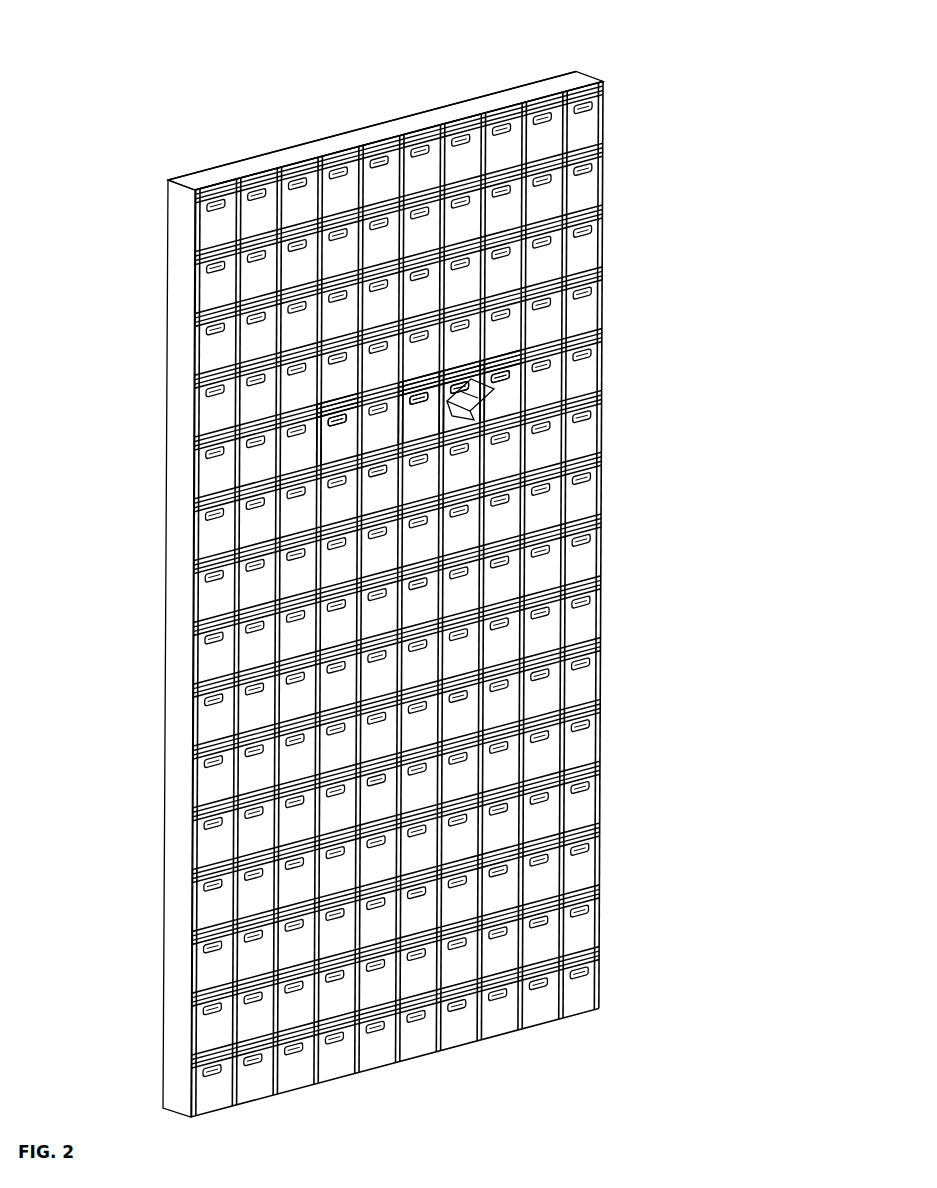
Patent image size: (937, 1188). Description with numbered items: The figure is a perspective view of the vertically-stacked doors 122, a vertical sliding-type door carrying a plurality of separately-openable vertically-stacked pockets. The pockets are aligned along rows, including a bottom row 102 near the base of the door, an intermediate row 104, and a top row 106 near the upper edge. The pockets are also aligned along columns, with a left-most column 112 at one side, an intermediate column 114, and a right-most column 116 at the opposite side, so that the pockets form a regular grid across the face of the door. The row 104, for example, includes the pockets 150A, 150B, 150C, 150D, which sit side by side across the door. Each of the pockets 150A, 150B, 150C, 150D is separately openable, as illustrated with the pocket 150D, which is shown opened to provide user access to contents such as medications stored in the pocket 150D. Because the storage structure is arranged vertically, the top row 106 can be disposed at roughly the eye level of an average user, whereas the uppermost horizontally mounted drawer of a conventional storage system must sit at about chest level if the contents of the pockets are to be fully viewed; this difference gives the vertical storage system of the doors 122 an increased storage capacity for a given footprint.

The bottom row 102 is at (188, 1079).
The row 104 is at (188, 471).
The top row 106 is at (195, 217).
The left-most column 112 is at (208, 178).
The intermediate column 114 is at (456, 112).
The right-most column 116 is at (578, 72).
The vertically-stacked doors 122 is at (147, 105).
The pocket 150A is at (330, 438).
The pocket 150B is at (420, 412).
The pocket 150C is at (445, 398).
The pocket 150D is at (474, 408).